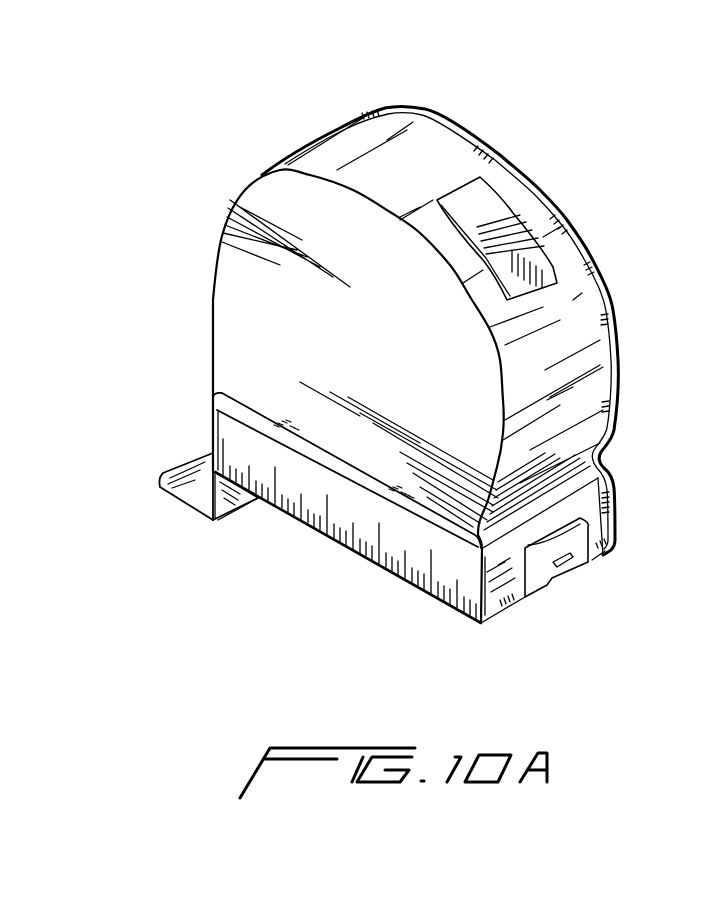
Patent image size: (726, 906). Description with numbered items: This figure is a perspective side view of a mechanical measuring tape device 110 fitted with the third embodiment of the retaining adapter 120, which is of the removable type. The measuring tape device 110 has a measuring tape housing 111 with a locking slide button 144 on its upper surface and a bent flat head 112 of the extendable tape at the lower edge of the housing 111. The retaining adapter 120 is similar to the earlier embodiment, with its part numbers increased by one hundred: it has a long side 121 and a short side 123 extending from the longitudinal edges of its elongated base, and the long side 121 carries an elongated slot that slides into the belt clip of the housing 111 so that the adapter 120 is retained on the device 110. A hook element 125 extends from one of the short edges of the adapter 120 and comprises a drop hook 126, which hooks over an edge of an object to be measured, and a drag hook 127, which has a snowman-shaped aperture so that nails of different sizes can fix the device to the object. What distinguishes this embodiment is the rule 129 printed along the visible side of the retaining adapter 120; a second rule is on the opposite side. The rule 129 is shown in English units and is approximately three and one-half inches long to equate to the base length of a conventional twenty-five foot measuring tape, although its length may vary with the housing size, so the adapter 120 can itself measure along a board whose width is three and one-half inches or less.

The mechanical measuring tape device 110 is at (208, 302).
The measuring tape housing 111 is at (224, 360).
The bent flat head 112 is at (580, 558).
The retaining adapter 120 is at (628, 378).
The long side 121 is at (613, 297).
The short side 123 is at (223, 411).
The hook element 125 is at (190, 514).
The drop hook 126 is at (230, 500).
The drag hook 127 is at (155, 482).
The rule 129 is at (393, 540).
The locking slide button 144 is at (483, 187).